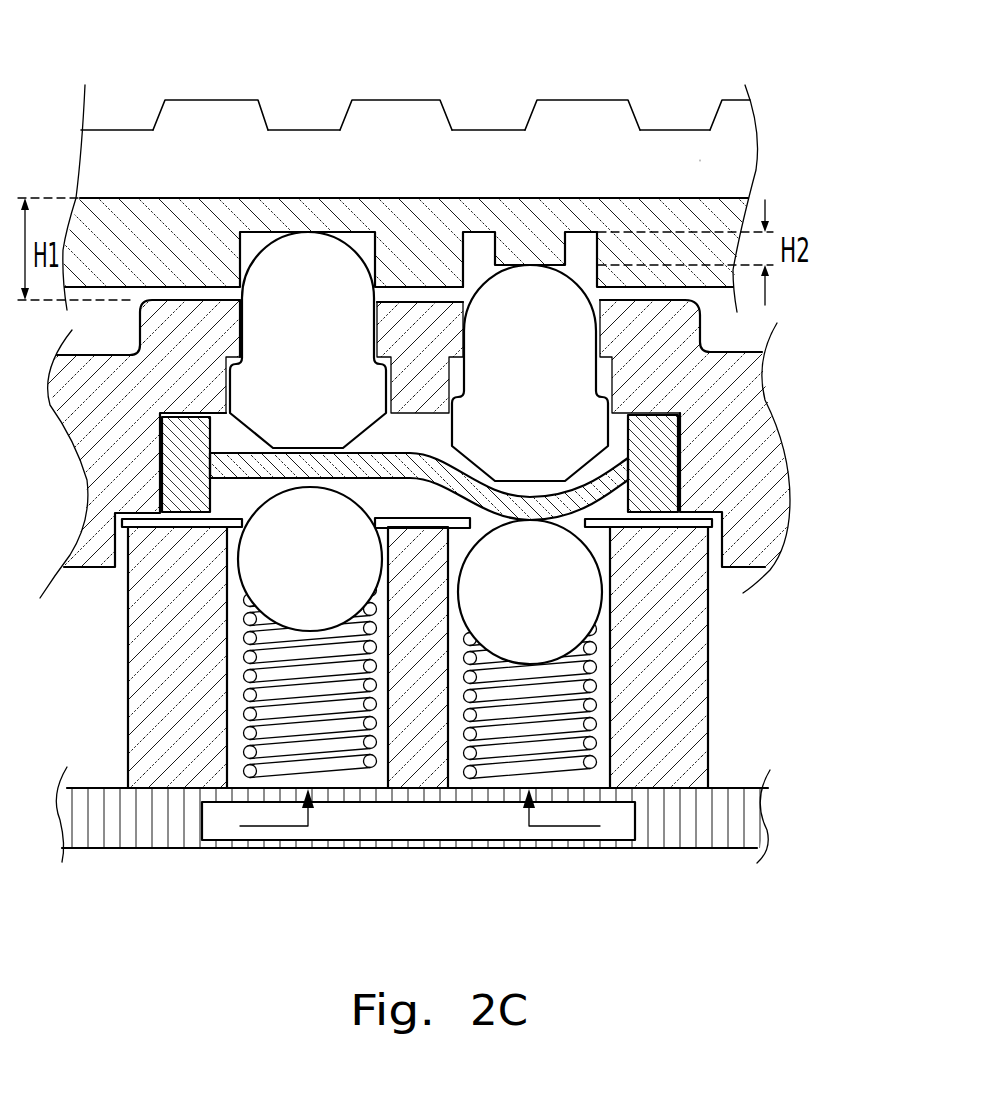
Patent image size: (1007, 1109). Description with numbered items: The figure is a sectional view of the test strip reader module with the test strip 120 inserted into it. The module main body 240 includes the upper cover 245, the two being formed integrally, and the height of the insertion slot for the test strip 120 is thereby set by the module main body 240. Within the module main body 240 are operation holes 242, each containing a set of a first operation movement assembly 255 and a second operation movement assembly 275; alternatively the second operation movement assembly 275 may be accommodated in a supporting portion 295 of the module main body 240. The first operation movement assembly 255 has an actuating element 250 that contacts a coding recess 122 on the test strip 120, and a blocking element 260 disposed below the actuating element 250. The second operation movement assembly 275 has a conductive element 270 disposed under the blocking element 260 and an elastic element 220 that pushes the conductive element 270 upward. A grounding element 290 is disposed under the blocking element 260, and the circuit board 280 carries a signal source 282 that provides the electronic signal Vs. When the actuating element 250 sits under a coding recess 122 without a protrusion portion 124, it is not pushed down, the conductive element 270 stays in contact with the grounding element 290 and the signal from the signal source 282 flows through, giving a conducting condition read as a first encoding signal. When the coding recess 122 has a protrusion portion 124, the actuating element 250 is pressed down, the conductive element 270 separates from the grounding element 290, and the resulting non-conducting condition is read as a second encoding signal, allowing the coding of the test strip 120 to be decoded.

The test strip 120 is at (410, 157).
The coding recess 122 is at (363, 245).
The protrusion portion 124 is at (518, 248).
The module main body 240 is at (404, 305).
The operation hole 242 is at (240, 330).
The upper cover 245 is at (737, 143).
The actuating element 250 is at (305, 262).
The first operation movement assembly 255 is at (520, 261).
The blocking element 260 is at (657, 457).
The conductive element 270 is at (260, 567).
The second operation movement assembly 275 is at (457, 633).
The elastic element 220 is at (250, 695).
The circuit board 280 is at (413, 840).
The signal source 282 is at (492, 820).
The grounding element 290 is at (710, 522).
The supporting portion 295 is at (148, 688).